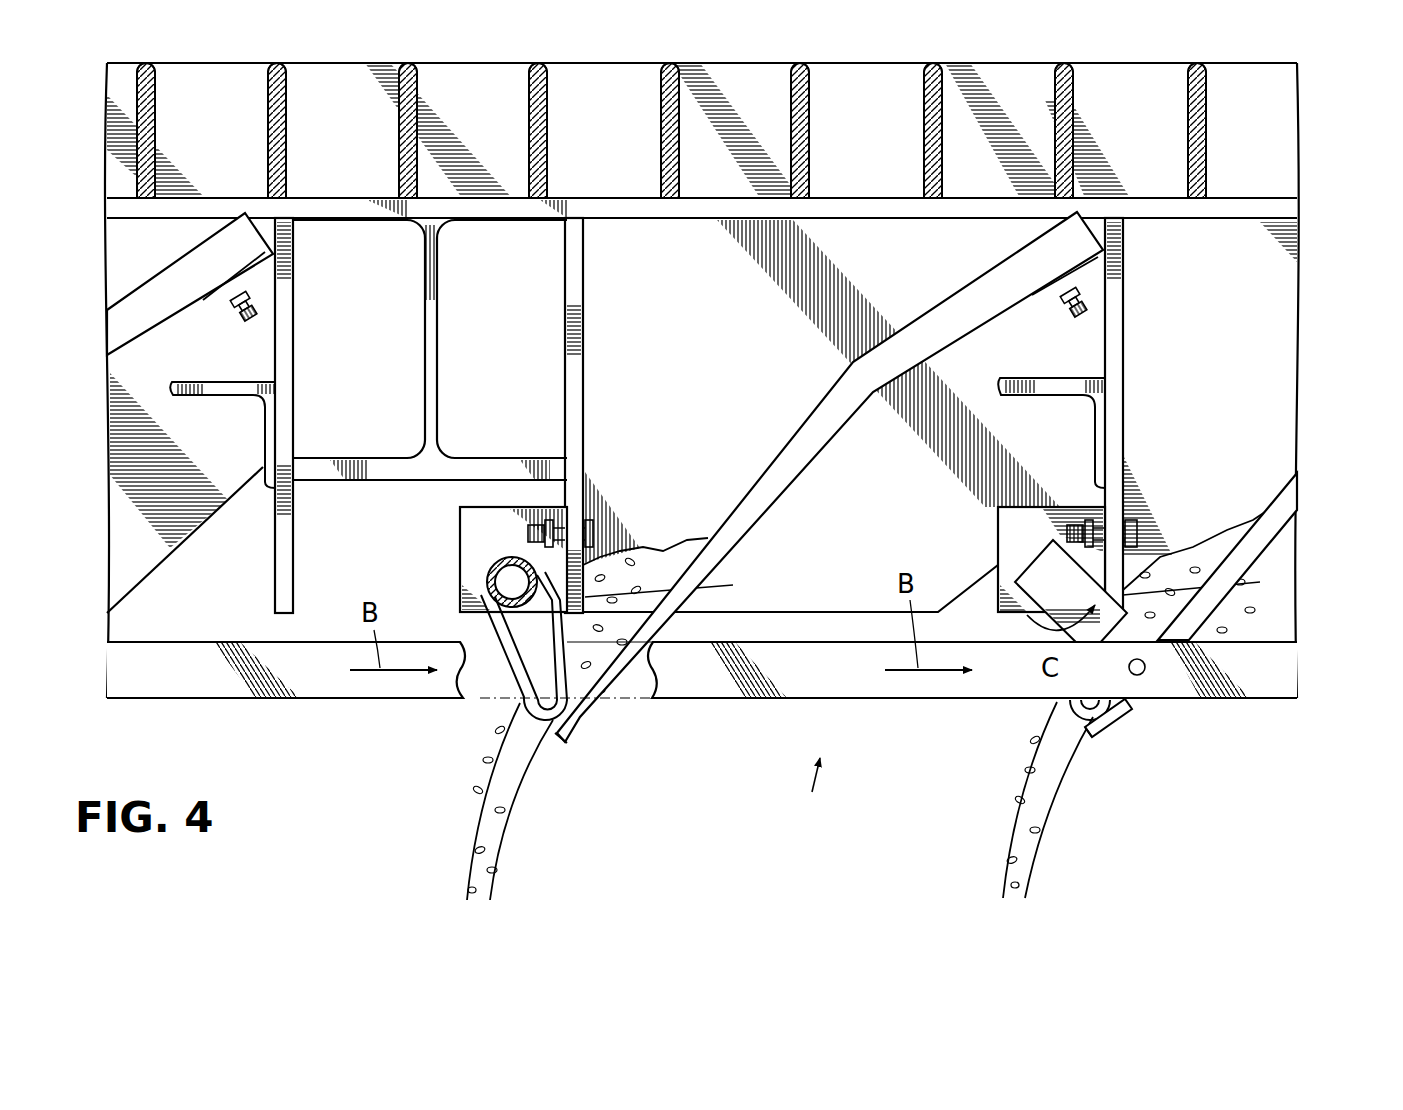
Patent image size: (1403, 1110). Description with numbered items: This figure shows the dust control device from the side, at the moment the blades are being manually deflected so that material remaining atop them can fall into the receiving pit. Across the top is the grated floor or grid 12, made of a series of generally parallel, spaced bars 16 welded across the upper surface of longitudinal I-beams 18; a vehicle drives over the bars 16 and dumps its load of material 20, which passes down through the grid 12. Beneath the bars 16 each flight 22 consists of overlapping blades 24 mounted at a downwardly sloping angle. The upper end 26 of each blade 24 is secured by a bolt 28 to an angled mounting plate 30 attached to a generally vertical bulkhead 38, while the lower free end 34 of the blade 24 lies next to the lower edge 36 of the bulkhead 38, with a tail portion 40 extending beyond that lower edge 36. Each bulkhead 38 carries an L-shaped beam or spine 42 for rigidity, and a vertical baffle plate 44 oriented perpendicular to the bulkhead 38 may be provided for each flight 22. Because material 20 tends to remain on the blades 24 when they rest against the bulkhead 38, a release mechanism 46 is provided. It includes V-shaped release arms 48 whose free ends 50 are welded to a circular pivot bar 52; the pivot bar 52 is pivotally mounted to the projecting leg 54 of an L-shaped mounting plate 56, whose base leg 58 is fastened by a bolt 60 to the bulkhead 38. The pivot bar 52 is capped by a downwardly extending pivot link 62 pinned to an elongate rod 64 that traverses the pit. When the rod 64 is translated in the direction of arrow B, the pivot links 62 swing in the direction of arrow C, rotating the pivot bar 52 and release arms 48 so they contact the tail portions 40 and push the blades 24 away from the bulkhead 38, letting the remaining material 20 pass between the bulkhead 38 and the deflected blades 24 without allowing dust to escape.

The grated floor or grid 12 is at (337, 61).
The spaced bars 16 is at (398, 137).
The longitudinal I-beams 18 is at (437, 280).
The material 20 is at (678, 540).
The flight 22 is at (798, 783).
The blades 24 is at (172, 275).
The upper end 26 is at (262, 212).
The bolt 28 is at (248, 315).
The angled mounting plate 30 is at (258, 270).
The lower free end 34 is at (558, 746).
The lower edge 36 is at (700, 587).
The bulkhead 38 is at (293, 380).
The tail portion 40 is at (605, 690).
The L-shaped beam or spine 42 is at (213, 382).
The vertical baffle plate 44 is at (208, 438).
The release mechanism 46 is at (1322, 676).
The release arms 48 is at (490, 626).
The free ends 50 is at (532, 540).
The pivot bar 52 is at (508, 557).
The projecting leg 54 is at (460, 543).
The L-shaped mounting plate 56 is at (458, 518).
The base leg 58 is at (560, 513).
The bolt 60 is at (594, 532).
The pivot link 62 is at (1043, 597).
The elongate rod 64 is at (347, 700).